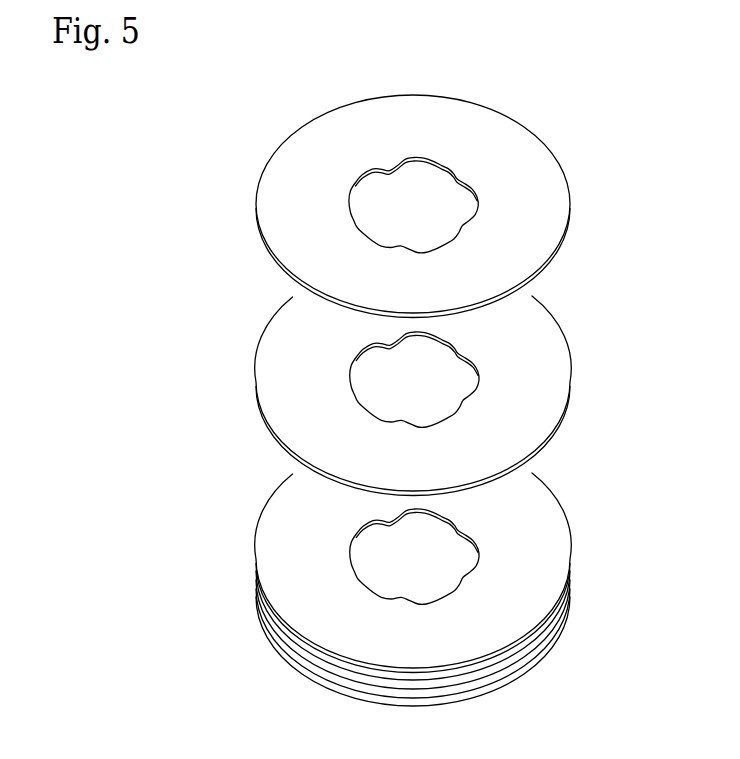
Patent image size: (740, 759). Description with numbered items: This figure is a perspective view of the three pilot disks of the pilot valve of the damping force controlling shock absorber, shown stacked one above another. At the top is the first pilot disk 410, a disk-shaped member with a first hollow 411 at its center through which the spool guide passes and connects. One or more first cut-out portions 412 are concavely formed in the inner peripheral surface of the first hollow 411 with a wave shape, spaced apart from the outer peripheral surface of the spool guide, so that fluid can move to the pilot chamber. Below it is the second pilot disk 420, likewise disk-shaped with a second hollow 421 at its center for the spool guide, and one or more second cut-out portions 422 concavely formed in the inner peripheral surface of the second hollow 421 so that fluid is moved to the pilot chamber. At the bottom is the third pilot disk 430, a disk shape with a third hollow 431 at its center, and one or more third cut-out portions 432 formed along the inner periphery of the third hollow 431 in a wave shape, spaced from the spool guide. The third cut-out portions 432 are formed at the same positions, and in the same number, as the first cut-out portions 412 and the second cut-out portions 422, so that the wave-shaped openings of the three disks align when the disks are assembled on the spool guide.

The first pilot disk 410 is at (488, 134).
The first hollow 411 is at (443, 207).
The first cut-out portion 412 is at (405, 165).
The second pilot disk 420 is at (530, 338).
The second hollow 421 is at (443, 385).
The second cut-out portion 422 is at (350, 398).
The third pilot disk 430 is at (530, 548).
The third hollow 431 is at (442, 562).
The third cut-out portion 432 is at (350, 575).